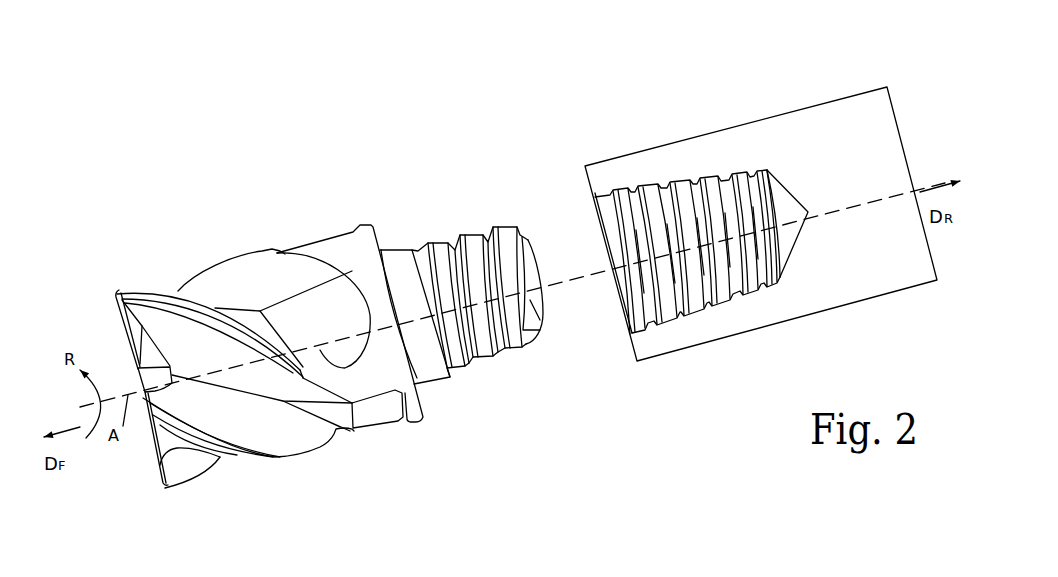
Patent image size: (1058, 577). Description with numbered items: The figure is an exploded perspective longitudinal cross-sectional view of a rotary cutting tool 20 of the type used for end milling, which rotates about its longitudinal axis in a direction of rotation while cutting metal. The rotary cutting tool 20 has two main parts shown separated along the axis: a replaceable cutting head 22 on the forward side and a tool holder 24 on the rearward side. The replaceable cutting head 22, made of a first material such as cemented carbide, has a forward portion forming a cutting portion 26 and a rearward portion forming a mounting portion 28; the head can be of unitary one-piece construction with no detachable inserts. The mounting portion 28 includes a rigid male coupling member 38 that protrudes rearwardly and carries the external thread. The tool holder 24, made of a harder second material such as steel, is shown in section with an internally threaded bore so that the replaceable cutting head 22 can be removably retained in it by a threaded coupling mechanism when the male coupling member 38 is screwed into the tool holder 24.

The rotary cutting tool 20 is at (195, 213).
The replaceable cutting head 22 is at (320, 197).
The tool holder 24 is at (750, 82).
The cutting portion 26 is at (315, 488).
The mounting portion 28 is at (508, 397).
The male coupling member 38 is at (468, 215).